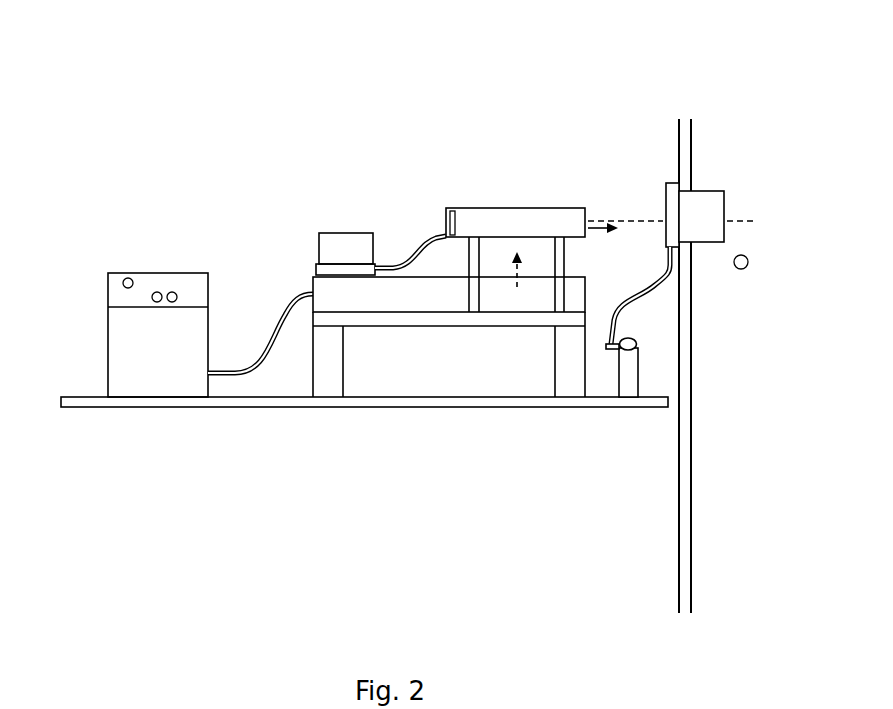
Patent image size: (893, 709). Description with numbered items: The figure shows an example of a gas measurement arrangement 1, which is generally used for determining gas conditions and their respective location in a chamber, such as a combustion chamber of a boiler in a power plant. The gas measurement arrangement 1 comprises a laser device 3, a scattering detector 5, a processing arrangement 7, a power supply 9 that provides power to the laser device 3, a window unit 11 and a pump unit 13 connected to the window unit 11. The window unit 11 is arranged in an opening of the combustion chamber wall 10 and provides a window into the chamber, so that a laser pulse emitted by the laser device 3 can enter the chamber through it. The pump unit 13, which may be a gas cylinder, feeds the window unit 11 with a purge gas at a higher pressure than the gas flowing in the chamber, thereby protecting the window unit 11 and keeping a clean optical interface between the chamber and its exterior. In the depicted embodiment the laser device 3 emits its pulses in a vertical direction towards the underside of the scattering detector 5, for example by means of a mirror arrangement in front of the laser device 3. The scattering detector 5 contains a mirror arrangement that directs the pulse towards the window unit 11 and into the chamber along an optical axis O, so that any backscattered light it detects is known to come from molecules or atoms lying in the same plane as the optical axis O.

The gas measurement arrangement 1 is at (506, 46).
The laser device 3 is at (418, 295).
The scattering detector 5 is at (510, 208).
The processing arrangement 7 is at (343, 233).
The power supply 9 is at (108, 335).
The combustion chamber wall 10 is at (692, 324).
The window unit 11 is at (724, 200).
The pump unit 13 is at (617, 378).
The optical axis O is at (742, 253).